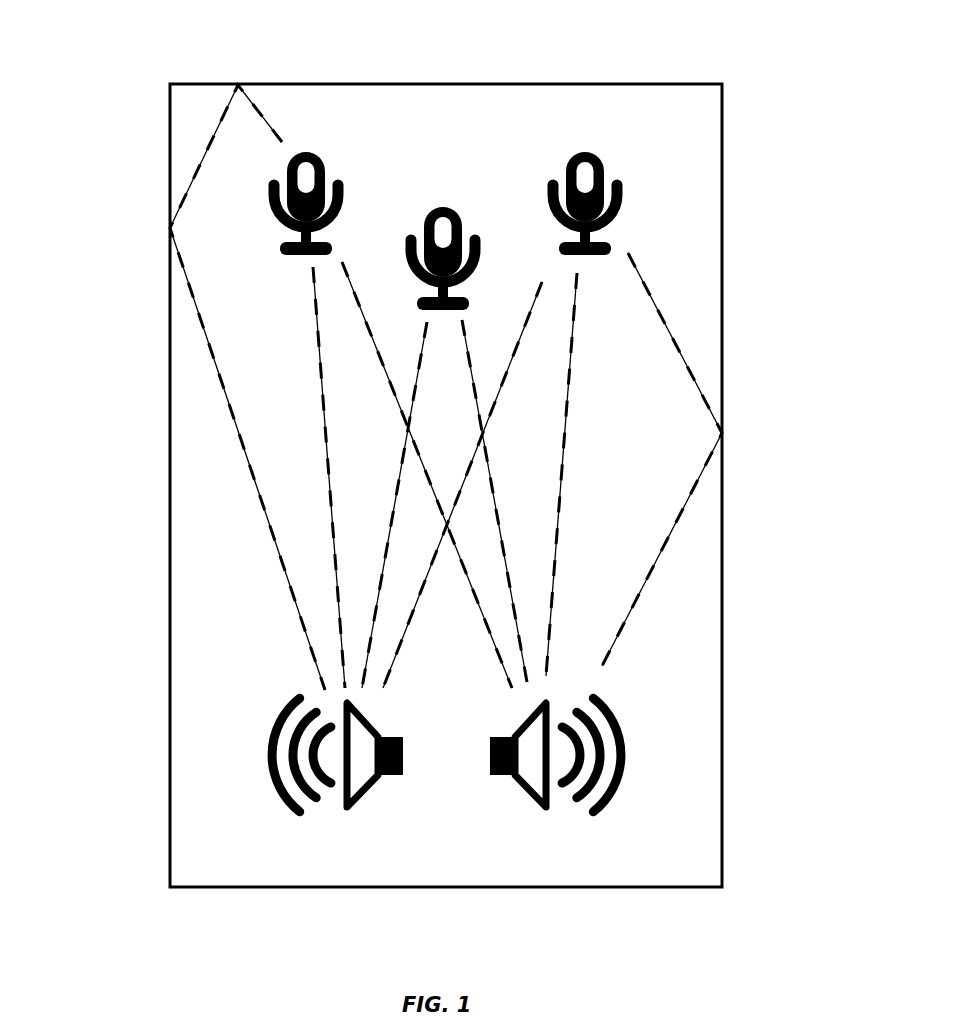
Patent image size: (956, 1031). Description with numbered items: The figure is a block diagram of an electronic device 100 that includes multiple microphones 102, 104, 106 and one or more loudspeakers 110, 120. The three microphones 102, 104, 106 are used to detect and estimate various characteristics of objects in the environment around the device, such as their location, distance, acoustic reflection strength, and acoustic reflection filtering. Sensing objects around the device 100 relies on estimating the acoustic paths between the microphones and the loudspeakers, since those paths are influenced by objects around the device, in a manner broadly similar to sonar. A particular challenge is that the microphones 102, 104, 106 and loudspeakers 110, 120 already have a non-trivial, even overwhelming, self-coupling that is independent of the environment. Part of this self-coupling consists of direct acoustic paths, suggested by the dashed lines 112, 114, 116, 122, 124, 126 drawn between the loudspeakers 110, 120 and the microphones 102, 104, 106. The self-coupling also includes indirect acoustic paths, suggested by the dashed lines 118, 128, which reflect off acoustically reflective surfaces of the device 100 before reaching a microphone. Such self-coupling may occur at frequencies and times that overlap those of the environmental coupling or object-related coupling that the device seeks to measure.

The electronic device 100 is at (169, 452).
The microphone 102 is at (323, 167).
The microphone 104 is at (465, 222).
The microphone 106 is at (608, 167).
The loudspeaker 110 is at (348, 805).
The loudspeaker 120 is at (543, 805).
The dashed line 112 is at (330, 492).
The dashed line 114 is at (385, 552).
The dashed line 116 is at (410, 610).
The dashed line 118 is at (198, 315).
The dashed line 122 is at (485, 614).
The dashed line 124 is at (505, 553).
The dashed line 126 is at (562, 478).
The dashed line 128 is at (663, 317).